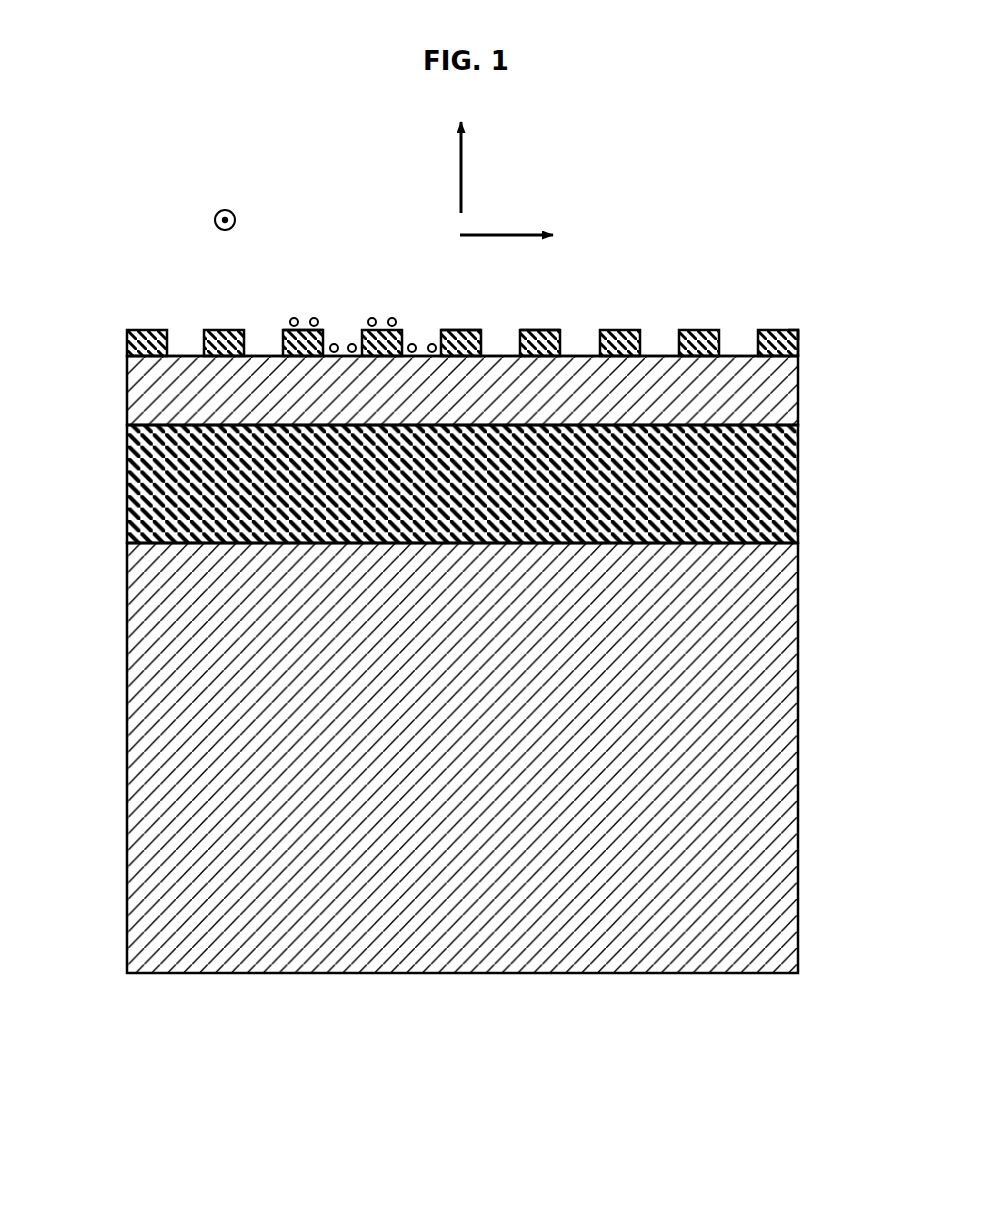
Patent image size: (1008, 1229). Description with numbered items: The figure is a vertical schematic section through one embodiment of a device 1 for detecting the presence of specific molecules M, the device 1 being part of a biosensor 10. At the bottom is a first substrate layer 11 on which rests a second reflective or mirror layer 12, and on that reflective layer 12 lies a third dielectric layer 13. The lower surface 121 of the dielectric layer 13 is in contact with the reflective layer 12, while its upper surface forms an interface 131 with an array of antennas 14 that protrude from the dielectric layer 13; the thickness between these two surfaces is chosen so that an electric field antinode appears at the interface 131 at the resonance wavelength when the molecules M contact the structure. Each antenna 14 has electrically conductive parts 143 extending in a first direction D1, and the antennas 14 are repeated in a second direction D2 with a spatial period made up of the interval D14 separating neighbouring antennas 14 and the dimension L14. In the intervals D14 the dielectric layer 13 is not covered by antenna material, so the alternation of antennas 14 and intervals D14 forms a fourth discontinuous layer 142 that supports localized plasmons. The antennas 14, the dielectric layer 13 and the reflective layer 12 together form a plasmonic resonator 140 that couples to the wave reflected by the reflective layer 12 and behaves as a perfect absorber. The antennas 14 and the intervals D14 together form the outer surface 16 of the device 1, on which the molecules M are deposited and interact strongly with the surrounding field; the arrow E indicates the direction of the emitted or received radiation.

The device 1 is at (613, 1017).
The biosensor 10 is at (700, 997).
The first substrate layer 11 is at (150, 768).
The second reflective layer 12 is at (148, 492).
The lower surface of the third dielectric layer 121 is at (193, 543).
The third dielectric layer 13 is at (145, 397).
The interface 131 is at (167, 422).
The antenna 14 is at (146, 338).
The plasmonic resonator 140 is at (115, 343).
The fourth discontinuous layer 142 is at (798, 340).
The electrically conductive parts 143 is at (287, 342).
The outer surface 16 is at (790, 318).
The specific molecules M is at (368, 330).
The first direction of extension D1 is at (235, 217).
The second direction of repetition D2 is at (506, 222).
The emission direction E is at (463, 168).
The interval D14 is at (736, 337).
The spatial period component L14 is at (441, 330).